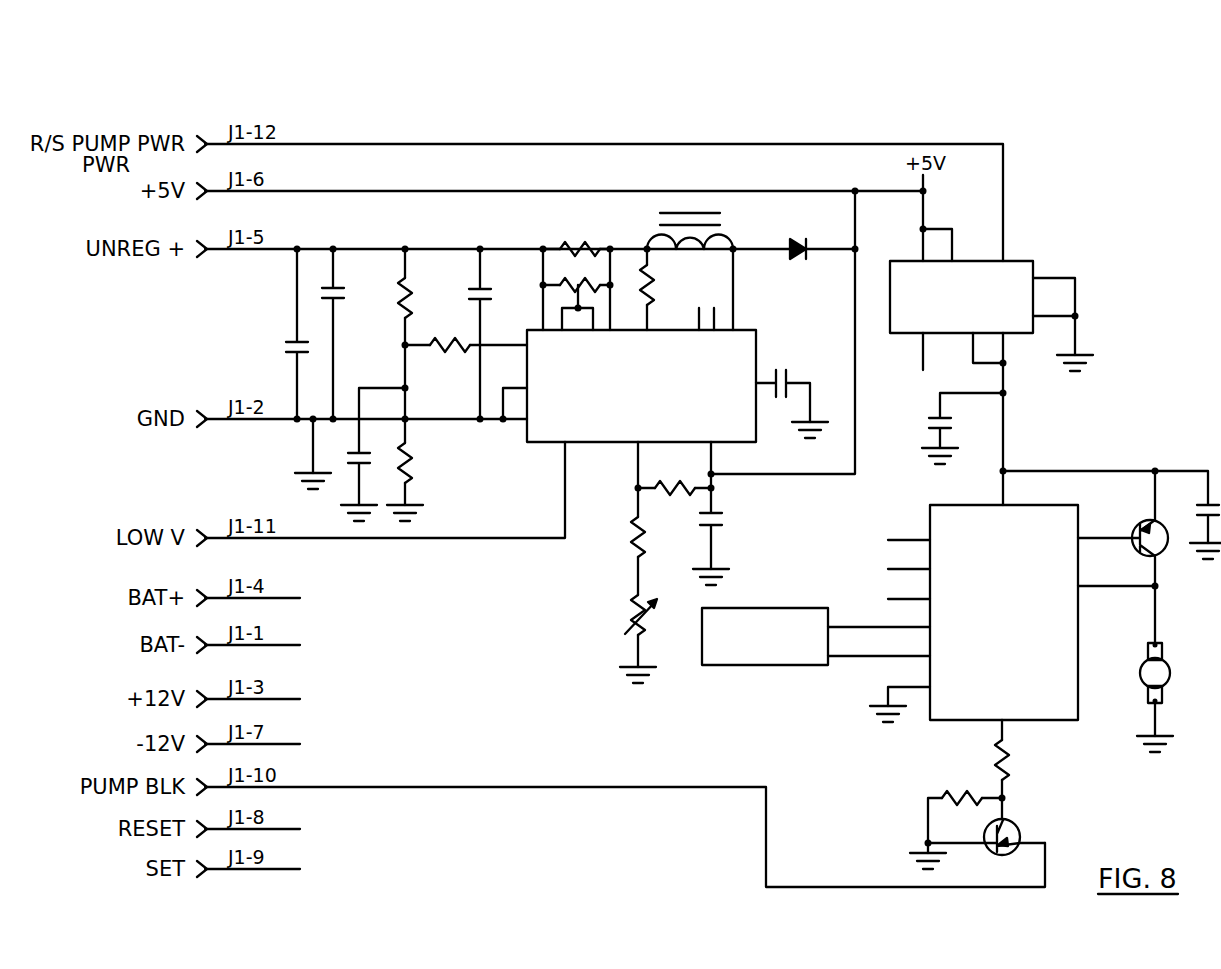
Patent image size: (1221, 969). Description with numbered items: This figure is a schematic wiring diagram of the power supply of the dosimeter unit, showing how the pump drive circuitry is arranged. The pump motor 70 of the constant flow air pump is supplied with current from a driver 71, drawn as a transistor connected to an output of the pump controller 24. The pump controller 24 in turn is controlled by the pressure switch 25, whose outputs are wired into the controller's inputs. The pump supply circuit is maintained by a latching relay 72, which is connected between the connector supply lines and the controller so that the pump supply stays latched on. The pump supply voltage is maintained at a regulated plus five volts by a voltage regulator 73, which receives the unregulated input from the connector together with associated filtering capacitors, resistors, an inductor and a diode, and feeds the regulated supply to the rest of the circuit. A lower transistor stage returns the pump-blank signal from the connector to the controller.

The pump controller 24 is at (1004, 612).
The pressure switch 25 is at (762, 666).
The pump motor 70 is at (1171, 673).
The driver 71 is at (1137, 526).
The latching relay 72 is at (1020, 262).
The voltage regulator 73 is at (757, 341).